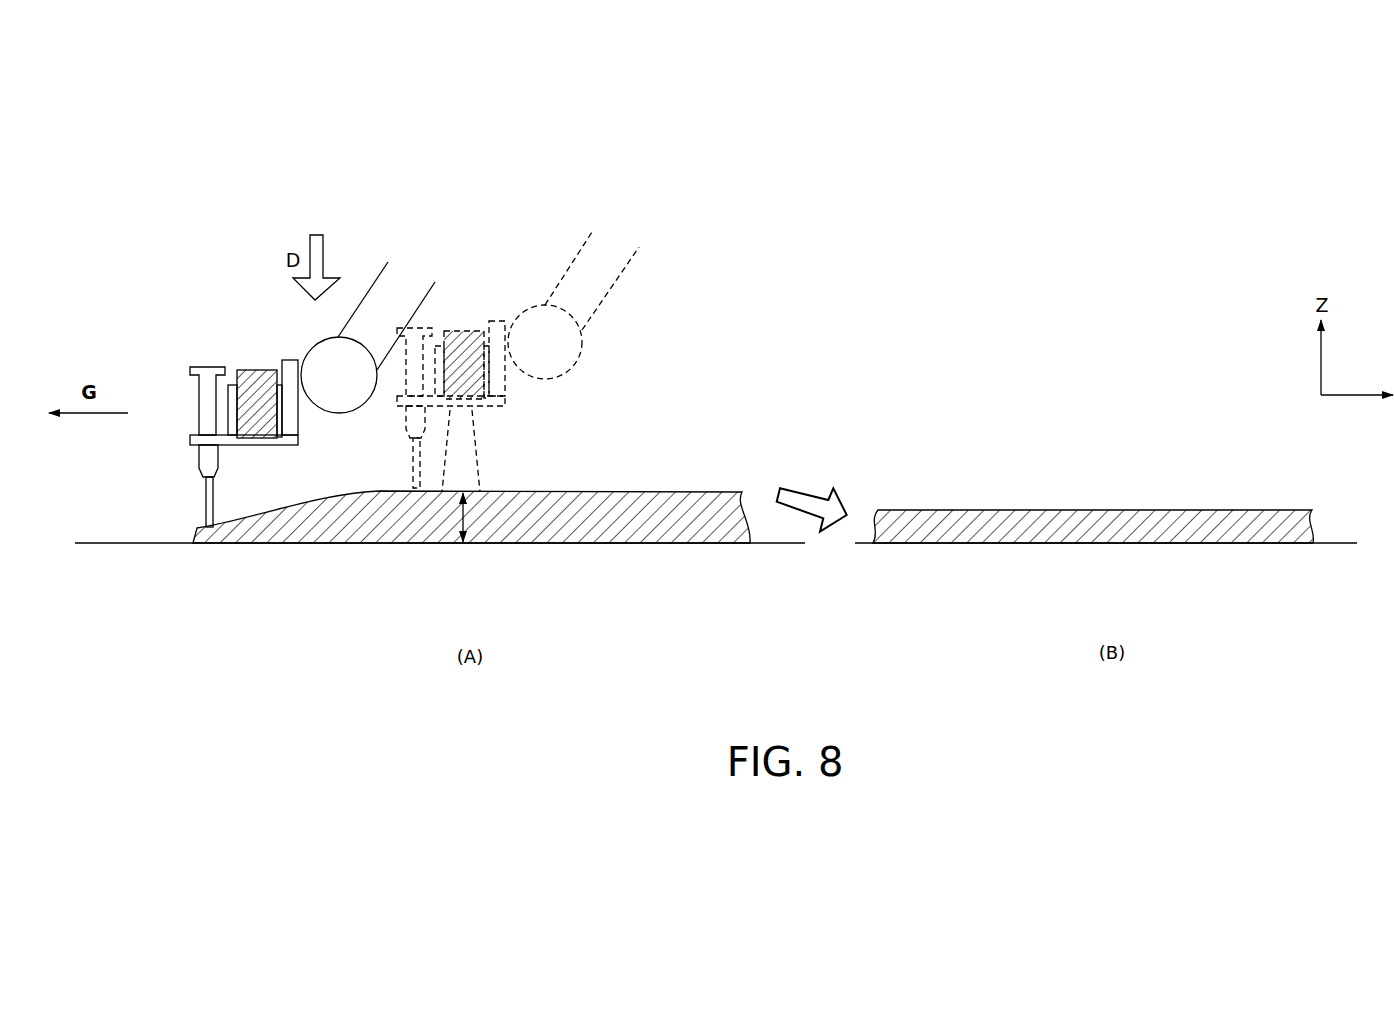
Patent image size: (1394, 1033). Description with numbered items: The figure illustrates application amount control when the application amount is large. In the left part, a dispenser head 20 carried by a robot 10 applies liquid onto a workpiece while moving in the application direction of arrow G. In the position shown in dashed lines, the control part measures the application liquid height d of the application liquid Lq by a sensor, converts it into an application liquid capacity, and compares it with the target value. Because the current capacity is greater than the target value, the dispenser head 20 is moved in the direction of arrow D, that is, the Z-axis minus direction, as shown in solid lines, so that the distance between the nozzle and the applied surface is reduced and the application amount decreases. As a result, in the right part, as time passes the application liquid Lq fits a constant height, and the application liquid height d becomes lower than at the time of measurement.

The robot 10 is at (370, 318).
The dispenser head 20 is at (208, 335).
The application liquid Lq is at (663, 507).
The application liquid height d is at (472, 520).